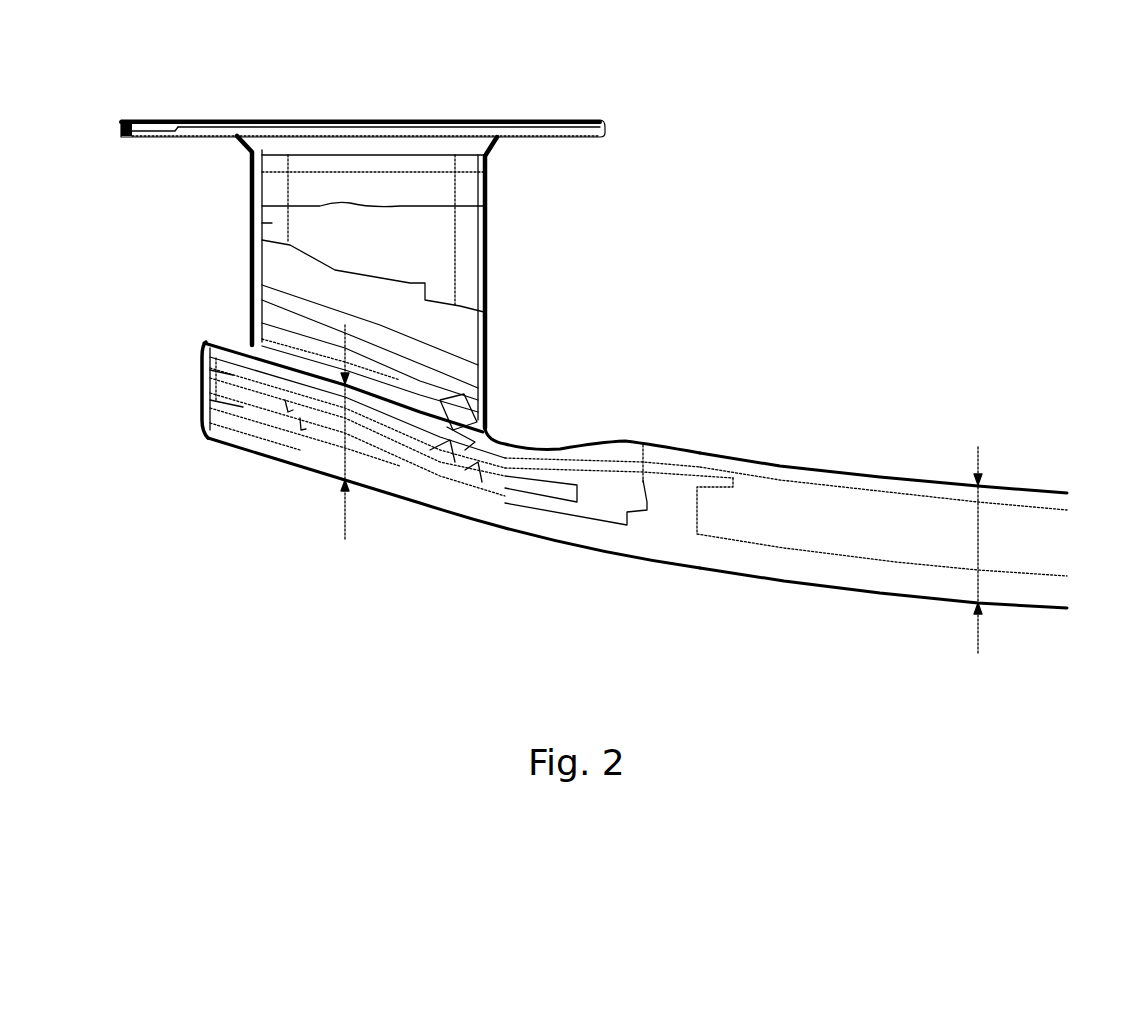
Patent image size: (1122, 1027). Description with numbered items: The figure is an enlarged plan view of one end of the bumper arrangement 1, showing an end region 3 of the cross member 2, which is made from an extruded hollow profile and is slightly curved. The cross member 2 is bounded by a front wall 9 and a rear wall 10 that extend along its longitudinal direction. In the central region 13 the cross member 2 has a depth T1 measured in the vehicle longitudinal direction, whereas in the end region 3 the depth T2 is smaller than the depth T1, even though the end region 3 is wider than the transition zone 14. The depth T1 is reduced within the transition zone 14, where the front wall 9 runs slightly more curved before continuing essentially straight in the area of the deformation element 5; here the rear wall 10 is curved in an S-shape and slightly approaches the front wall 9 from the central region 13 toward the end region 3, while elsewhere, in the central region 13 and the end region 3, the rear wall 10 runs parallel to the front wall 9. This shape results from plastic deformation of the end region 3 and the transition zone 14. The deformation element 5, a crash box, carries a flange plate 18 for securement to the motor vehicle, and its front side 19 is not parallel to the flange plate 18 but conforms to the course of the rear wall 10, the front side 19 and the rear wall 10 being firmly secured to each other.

The bumper arrangement 1 is at (812, 212).
The cross member 2 is at (857, 478).
The end region 3 is at (508, 697).
The deformation element 5 is at (248, 222).
The front wall 9 is at (240, 448).
The rear wall 10 is at (688, 450).
The central region 13 is at (1056, 699).
The transition zone 14 is at (645, 700).
The flange plate 18 is at (578, 143).
The front side 19 is at (442, 405).
The depth T1 is at (985, 458).
The depth T2 is at (345, 515).